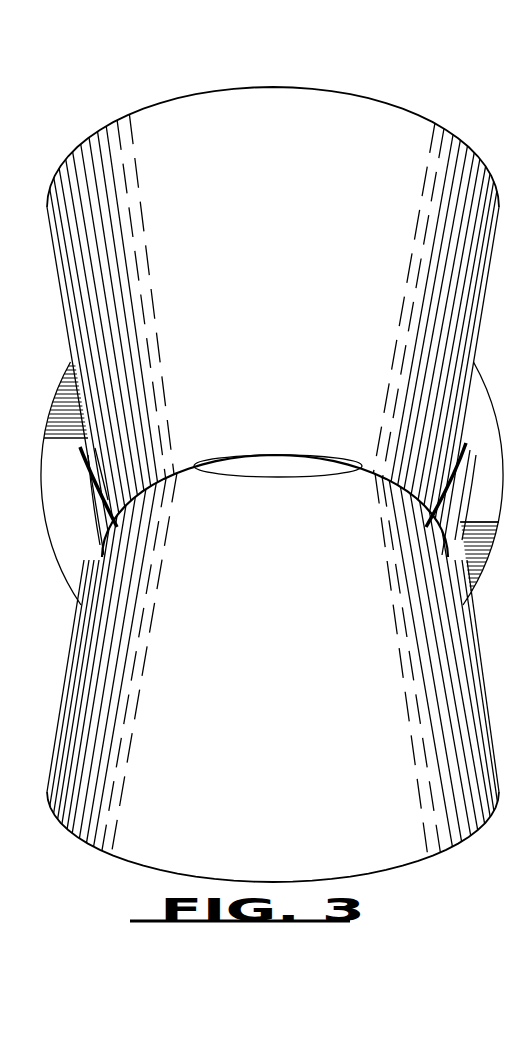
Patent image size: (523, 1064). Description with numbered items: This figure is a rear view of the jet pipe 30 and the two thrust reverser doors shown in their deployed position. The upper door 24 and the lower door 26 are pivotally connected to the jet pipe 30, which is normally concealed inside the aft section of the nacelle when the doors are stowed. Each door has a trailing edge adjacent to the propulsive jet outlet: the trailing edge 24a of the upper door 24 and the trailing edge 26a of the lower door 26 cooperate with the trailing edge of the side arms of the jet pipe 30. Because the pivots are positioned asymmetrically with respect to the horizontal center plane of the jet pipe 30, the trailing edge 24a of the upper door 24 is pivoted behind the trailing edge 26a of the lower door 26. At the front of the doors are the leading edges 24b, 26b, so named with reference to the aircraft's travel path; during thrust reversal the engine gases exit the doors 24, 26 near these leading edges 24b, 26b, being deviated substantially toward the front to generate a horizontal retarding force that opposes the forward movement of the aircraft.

The upper door 24 is at (179, 127).
The trailing edge of the upper door 24a is at (279, 455).
The leading edge of the upper door 24b is at (385, 100).
The lower door 26 is at (133, 822).
The trailing edge of the lower door 26a is at (276, 478).
The leading edge of the lower door 26b is at (432, 853).
The jet pipe 30 is at (62, 483).